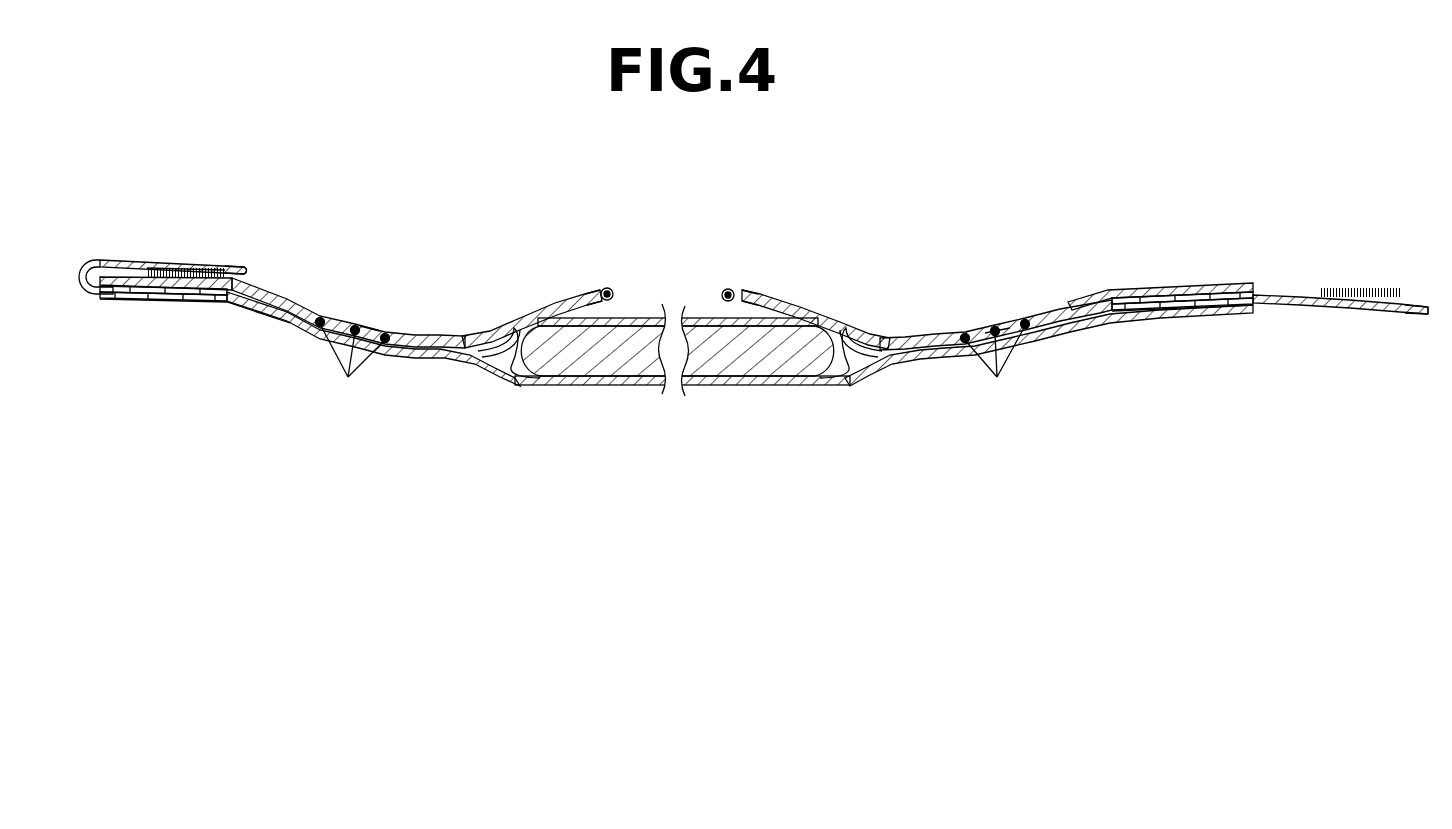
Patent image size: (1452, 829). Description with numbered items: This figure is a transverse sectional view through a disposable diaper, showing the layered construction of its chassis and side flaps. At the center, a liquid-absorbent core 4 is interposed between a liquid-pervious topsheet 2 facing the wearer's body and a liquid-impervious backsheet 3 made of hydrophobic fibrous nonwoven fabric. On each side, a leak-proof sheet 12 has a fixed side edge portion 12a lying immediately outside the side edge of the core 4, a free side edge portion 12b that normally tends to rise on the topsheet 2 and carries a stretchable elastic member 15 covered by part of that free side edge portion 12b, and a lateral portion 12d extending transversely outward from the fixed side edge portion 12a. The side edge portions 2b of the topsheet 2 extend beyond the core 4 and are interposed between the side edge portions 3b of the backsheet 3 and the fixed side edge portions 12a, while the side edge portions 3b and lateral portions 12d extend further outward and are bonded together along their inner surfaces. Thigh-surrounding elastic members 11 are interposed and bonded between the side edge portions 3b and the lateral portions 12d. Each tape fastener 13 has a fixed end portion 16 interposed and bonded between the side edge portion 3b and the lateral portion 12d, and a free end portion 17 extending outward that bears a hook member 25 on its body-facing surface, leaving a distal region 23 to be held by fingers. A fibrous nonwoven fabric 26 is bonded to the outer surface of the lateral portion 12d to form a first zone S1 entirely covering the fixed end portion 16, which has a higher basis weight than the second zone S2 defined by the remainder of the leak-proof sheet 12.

The topsheet 2 is at (638, 317).
The side edge portions of the topsheet 2b is at (483, 373).
The backsheet 3 is at (720, 377).
The side edge portions of the backsheet 3b is at (252, 317).
The liquid-absorbent core 4 is at (703, 353).
The thigh-surrounding elastic members 11 is at (673, 370).
The leak-proof sheet 12 is at (530, 308).
The fixed side edge portion 12a is at (450, 337).
The free side edge portion 12b is at (587, 292).
The lateral portion 12d is at (338, 323).
The tape fastener 13 is at (243, 269).
The stretchable elastic member 15 is at (610, 288).
The fixed end portion 16 is at (160, 303).
The free end portion 17 is at (163, 276).
The distal region 23 is at (237, 263).
The hook member 25 is at (200, 272).
The fibrous nonwoven fabric 26 is at (132, 278).
The first zone S1 is at (188, 303).
The second zone S2 is at (1002, 323).